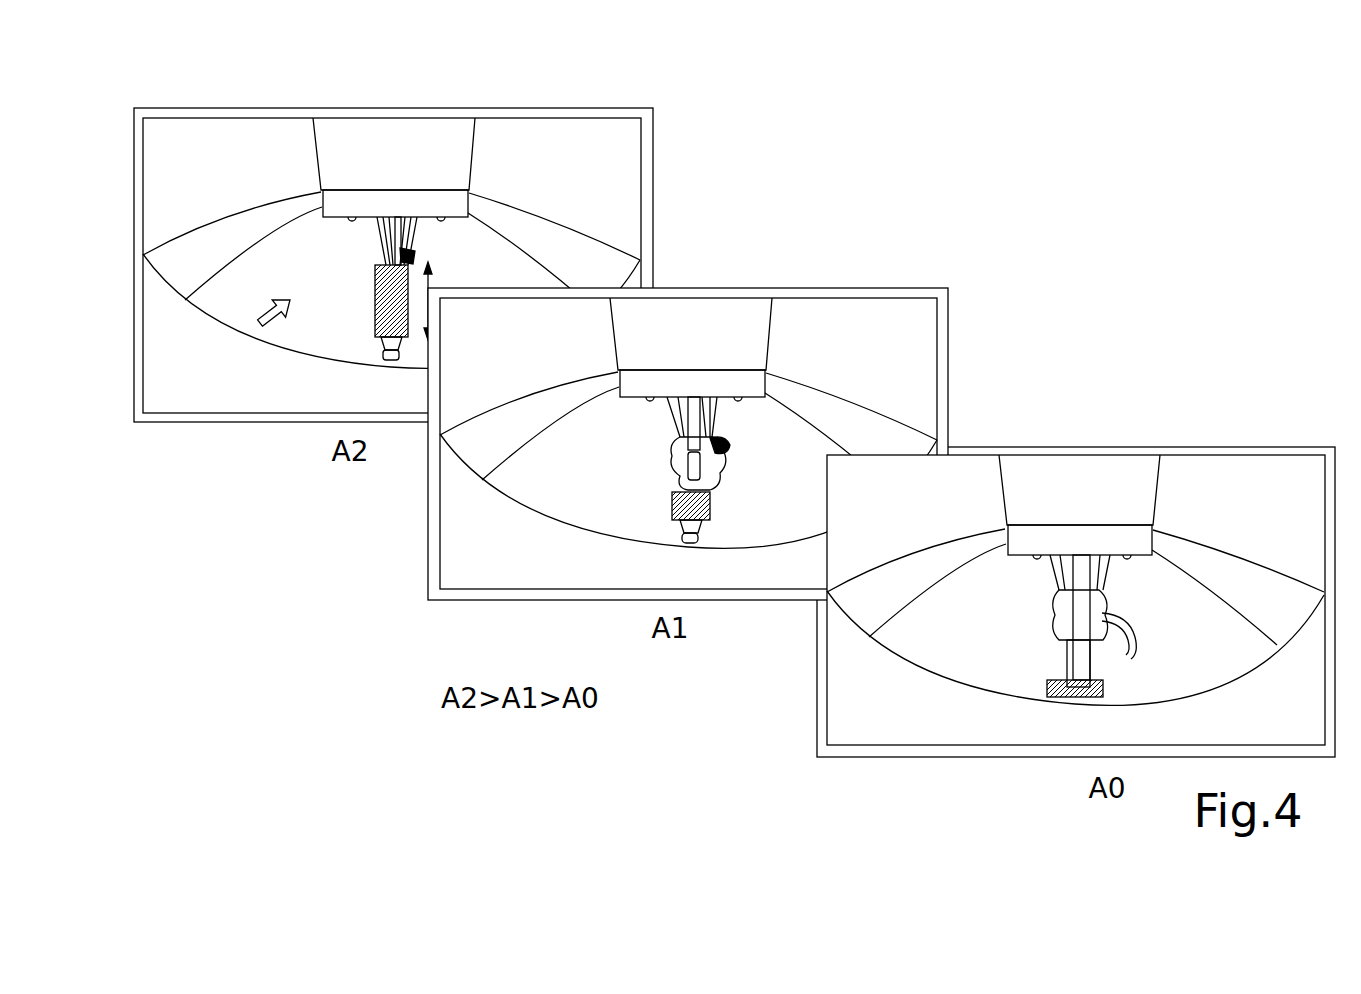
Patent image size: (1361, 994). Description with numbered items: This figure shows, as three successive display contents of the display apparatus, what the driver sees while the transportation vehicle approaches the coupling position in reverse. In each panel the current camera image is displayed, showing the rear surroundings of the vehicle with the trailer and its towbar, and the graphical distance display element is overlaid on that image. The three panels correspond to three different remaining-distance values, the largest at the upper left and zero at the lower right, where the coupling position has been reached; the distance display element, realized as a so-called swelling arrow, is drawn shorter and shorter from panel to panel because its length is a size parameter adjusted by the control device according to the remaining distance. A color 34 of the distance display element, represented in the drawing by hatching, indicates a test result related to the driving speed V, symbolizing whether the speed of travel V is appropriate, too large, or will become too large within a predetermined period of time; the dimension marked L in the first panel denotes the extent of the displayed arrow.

The color 34 is at (367, 256).
The tool length L is at (455, 297).
The driving speed V is at (247, 303).